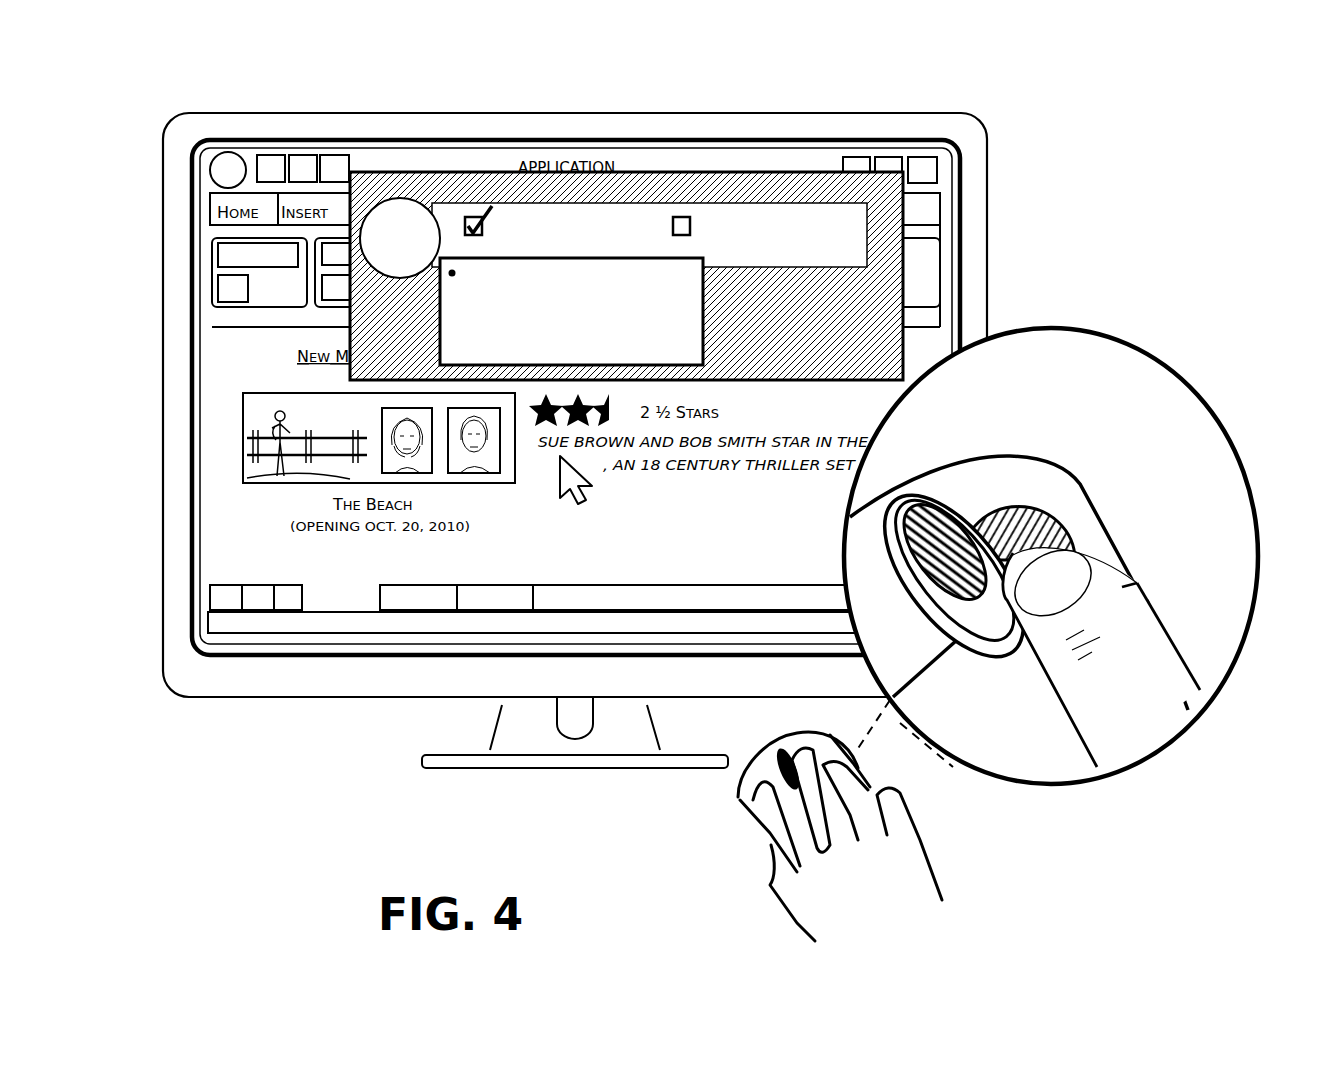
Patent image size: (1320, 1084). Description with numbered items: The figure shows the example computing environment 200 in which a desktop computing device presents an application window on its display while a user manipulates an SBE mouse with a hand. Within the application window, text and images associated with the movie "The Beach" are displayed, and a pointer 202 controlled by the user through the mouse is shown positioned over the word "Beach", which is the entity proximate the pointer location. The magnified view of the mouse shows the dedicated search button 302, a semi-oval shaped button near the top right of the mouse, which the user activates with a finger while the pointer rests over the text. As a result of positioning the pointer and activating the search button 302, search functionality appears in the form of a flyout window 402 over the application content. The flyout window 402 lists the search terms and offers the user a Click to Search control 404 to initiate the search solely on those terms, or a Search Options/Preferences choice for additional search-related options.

The computing environment 200 is at (564, 413).
The flyout window 402 is at (870, 293).
The Click to Search control 404 is at (404, 199).
The pointer 202 is at (594, 480).
The search button 302 is at (1030, 525).